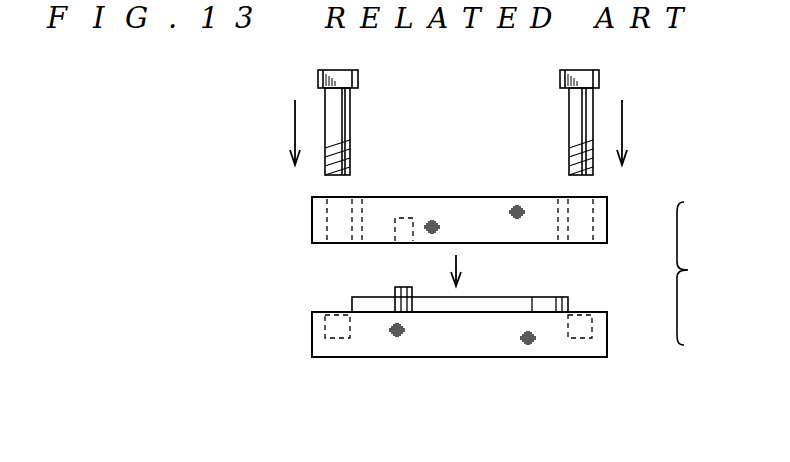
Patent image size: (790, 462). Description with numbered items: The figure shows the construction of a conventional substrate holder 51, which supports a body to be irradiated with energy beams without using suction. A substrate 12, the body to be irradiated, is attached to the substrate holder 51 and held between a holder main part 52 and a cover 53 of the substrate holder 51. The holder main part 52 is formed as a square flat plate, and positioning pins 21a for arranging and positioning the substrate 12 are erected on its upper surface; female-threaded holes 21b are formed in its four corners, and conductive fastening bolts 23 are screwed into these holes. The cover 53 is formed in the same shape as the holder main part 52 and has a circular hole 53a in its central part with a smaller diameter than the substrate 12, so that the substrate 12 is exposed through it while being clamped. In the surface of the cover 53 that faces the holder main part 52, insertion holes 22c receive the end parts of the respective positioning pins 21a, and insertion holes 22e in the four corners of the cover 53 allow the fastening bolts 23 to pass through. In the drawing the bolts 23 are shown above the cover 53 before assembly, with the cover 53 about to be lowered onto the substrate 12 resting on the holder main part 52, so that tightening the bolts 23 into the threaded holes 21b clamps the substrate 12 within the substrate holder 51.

The fastening bolt 23 is at (560, 80).
The insertion hole 22e is at (351, 200).
The circular hole 53a is at (480, 196).
The cover 53 is at (607, 230).
The insertion hole 22c is at (403, 244).
The positioning pin 21a is at (428, 273).
The substrate 12 is at (533, 300).
The female-threaded hole 21b is at (340, 319).
The holder main part 52 is at (607, 338).
The substrate holder 51 is at (701, 273).